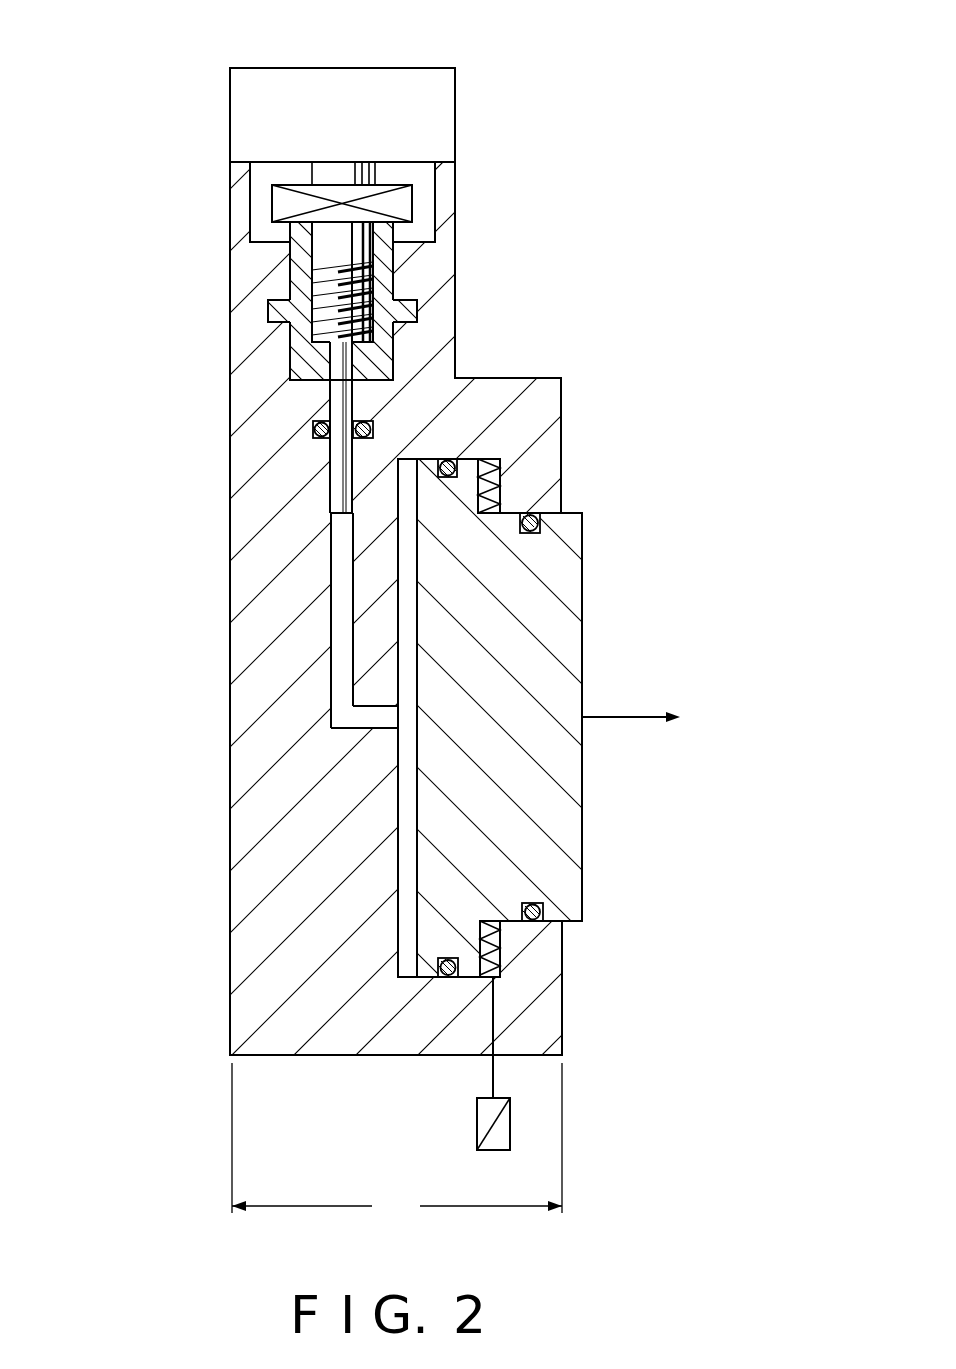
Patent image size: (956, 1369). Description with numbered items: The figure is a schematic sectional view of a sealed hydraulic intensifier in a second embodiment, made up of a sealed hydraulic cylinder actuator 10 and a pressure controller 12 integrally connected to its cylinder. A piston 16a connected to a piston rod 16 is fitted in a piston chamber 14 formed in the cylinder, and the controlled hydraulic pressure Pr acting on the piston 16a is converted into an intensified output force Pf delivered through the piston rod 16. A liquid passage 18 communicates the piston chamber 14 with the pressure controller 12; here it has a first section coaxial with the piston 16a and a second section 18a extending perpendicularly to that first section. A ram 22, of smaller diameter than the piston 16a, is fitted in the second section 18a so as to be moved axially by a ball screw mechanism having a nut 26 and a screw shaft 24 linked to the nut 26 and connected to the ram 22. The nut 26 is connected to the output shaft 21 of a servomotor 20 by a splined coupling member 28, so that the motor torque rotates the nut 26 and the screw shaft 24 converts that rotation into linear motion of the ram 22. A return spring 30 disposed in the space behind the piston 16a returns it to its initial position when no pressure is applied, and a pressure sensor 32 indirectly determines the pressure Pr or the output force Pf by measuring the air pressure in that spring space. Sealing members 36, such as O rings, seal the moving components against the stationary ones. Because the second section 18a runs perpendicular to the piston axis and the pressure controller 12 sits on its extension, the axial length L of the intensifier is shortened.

The sealed hydraulic cylinder actuator 10 is at (588, 476).
The pressure controller 12 is at (248, 68).
The piston chamber 14 is at (408, 932).
The piston rod 16 is at (562, 632).
The piston 16a is at (468, 470).
The liquid passage 18 is at (360, 722).
The second section of liquid passage 18a is at (337, 625).
The servomotor 20 is at (437, 108).
The output shaft 21 is at (333, 168).
The ram 22 is at (340, 487).
The screw shaft 24 is at (312, 282).
The nut 26 is at (417, 302).
The coupling member 28 is at (412, 205).
The return spring 30 is at (500, 958).
The pressure sensor 32 is at (483, 1118).
The sealing members 36 is at (313, 432).